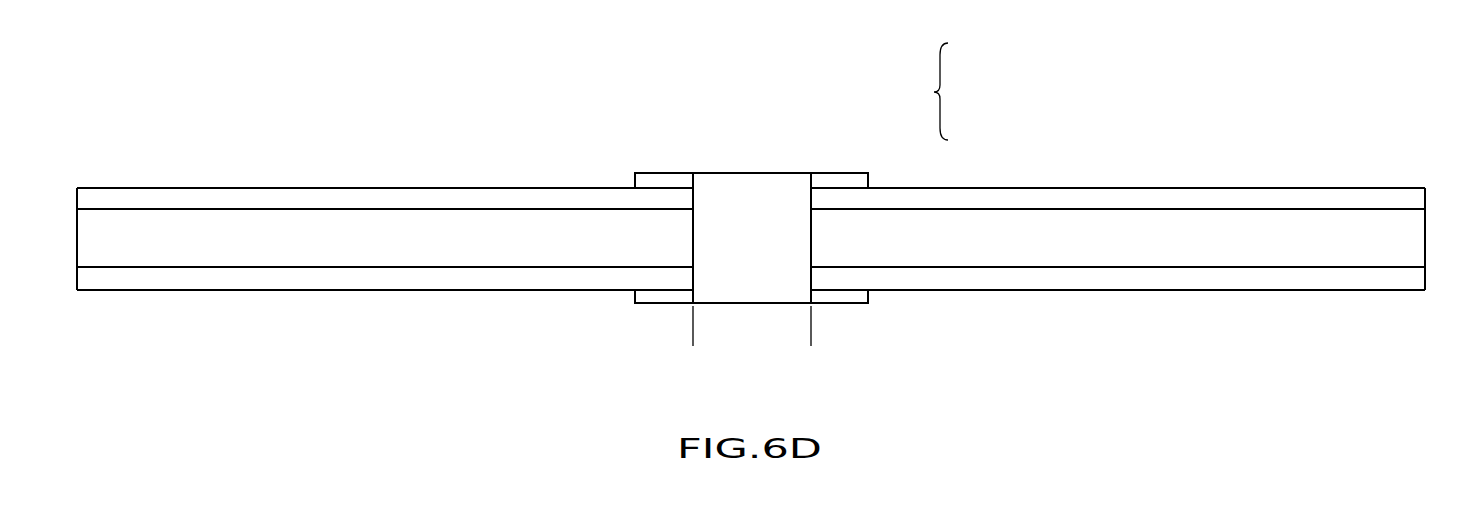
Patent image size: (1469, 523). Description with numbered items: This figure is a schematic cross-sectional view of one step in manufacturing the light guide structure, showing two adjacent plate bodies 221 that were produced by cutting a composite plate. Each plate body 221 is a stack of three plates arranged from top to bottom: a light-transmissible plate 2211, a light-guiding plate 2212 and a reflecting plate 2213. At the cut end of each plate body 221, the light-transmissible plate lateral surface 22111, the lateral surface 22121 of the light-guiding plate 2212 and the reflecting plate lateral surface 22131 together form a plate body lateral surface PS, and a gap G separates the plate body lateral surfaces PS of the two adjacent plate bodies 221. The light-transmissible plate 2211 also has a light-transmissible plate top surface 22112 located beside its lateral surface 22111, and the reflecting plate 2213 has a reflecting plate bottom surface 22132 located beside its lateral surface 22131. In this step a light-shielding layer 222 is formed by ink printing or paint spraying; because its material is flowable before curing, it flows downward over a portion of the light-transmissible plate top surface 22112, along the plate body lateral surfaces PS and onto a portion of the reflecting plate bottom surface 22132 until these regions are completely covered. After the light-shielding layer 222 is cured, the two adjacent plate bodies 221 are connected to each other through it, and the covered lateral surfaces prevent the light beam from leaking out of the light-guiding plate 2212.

The plate body 221 is at (305, 168).
The light-transmissible plate 2211 is at (182, 197).
The light-guiding plate 2212 is at (188, 238).
The reflecting plate 2213 is at (227, 278).
The light-shielding layer 222 is at (752, 205).
The light-transmissible plate lateral surface 22111 is at (692, 197).
The light-transmissible plate top surface 22112 is at (488, 188).
The lateral surface 22121 is at (692, 238).
The reflecting plate lateral surface 22131 is at (692, 281).
The reflecting plate bottom surface 22132 is at (488, 292).
The plate body lateral surface PS is at (924, 91).
The gap G is at (810, 332).